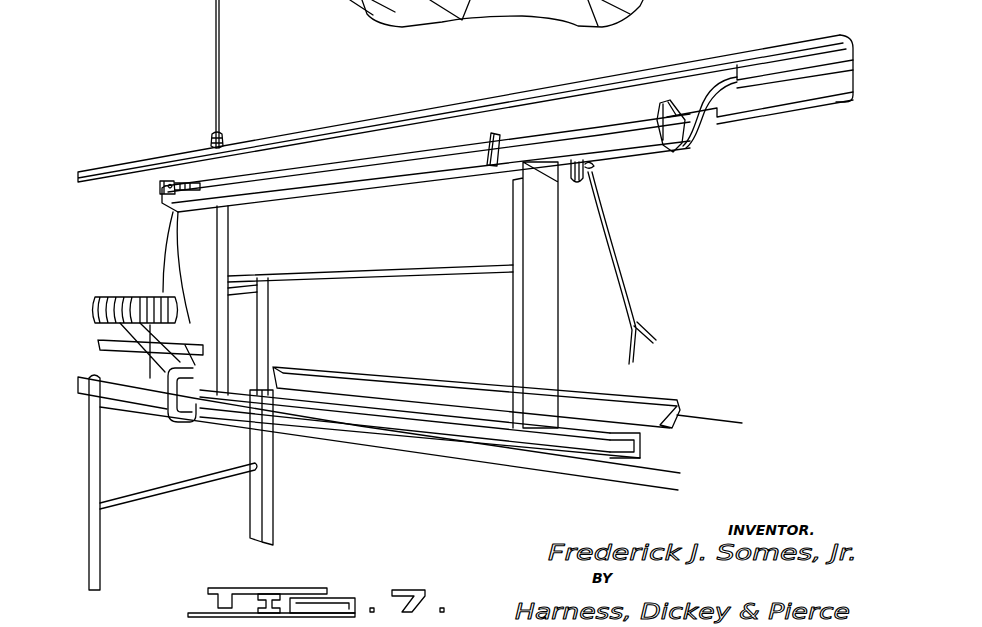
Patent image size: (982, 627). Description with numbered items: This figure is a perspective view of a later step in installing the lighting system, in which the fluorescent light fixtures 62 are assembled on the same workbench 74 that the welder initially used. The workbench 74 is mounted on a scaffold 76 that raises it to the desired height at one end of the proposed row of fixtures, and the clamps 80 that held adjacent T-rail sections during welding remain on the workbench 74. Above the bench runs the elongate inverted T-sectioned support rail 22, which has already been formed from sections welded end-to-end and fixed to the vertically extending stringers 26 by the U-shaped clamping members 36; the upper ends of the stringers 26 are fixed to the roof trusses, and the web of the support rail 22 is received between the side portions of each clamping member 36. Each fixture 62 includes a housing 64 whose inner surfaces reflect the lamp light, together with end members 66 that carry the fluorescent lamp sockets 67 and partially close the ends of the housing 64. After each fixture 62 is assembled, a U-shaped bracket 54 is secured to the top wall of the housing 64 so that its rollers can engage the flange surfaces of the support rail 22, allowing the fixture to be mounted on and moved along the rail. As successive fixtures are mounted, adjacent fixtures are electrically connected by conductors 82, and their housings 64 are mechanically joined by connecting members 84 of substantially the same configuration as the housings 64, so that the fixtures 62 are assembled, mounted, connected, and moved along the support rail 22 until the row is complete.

The support rail 22 is at (140, 158).
The stringers 26 is at (220, 55).
The clamping members 36 is at (233, 136).
The bracket 54 is at (561, 181).
The fluorescent lighting fixtures 62 is at (623, 168).
The housing 64 is at (372, 168).
The end members 66 is at (160, 184).
The fluorescent lamp sockets 67 is at (178, 186).
The workbench 74 is at (540, 327).
The scaffold 76 is at (270, 508).
The clamps 80 is at (501, 141).
The conductors 82 is at (690, 126).
The connecting members 84 is at (690, 142).